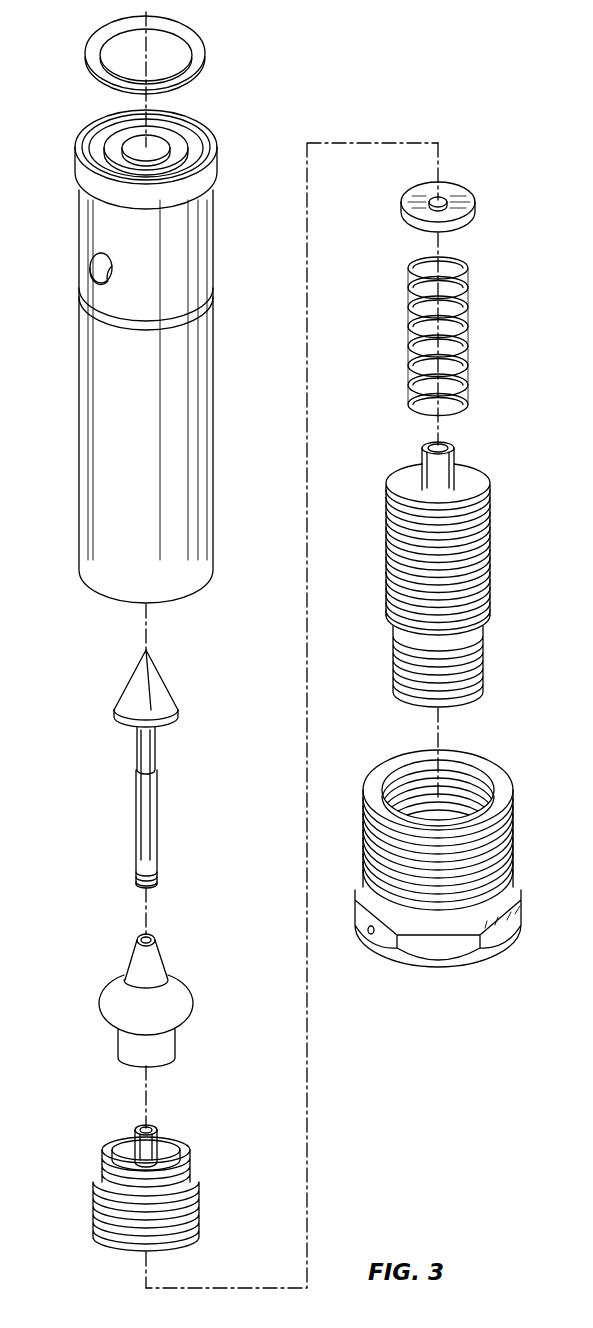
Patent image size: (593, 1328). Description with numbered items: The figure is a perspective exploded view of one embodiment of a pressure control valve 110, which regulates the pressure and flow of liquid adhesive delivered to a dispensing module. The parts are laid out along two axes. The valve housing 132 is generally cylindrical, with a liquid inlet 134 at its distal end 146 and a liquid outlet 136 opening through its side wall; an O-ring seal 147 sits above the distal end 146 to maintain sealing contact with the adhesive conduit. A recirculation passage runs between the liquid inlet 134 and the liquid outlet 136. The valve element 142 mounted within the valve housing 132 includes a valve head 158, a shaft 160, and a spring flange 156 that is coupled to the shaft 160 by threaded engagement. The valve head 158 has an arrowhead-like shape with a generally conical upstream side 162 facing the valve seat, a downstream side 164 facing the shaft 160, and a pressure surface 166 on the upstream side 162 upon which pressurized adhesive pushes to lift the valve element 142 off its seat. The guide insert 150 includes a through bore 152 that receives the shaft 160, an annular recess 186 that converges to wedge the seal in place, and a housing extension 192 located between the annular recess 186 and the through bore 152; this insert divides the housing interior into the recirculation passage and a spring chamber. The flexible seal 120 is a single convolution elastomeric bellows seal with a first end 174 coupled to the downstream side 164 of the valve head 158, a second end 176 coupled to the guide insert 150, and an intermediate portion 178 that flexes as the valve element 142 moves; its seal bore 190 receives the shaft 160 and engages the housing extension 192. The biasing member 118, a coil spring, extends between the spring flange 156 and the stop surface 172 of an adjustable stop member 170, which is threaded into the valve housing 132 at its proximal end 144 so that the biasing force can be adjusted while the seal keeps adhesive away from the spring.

The pressure control valve 110 is at (442, 100).
The biasing member 118 is at (470, 323).
The flexible seal 120 is at (142, 995).
The valve housing 132 is at (300, 552).
The liquid inlet 134 is at (163, 146).
The liquid outlet 136 is at (91, 270).
The valve element 142 is at (144, 757).
The proximal end 144 is at (438, 960).
The distal end 146 is at (85, 138).
The O-ring seal 147 is at (207, 52).
The guide insert 150 is at (152, 1183).
The through bore 152 is at (140, 1127).
The spring flange 156 is at (463, 185).
The valve head 158 is at (144, 689).
The shaft 160 is at (137, 803).
The upstream side 162 is at (121, 694).
The downstream side 164 is at (125, 726).
The pressure surface 166 is at (143, 652).
The adjustable stop member 170 is at (465, 574).
The stop surface 172 is at (472, 475).
The first end 174 is at (160, 942).
The second end 176 is at (128, 1058).
The intermediate portion 178 is at (100, 1000).
The annular recess 186 is at (165, 1145).
The seal bore 190 is at (139, 937).
The housing extension 192 is at (135, 1158).